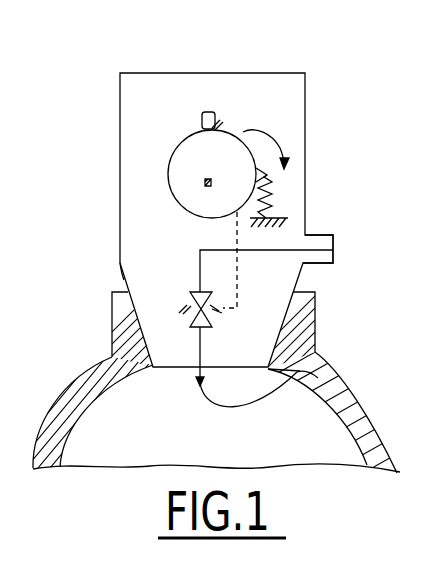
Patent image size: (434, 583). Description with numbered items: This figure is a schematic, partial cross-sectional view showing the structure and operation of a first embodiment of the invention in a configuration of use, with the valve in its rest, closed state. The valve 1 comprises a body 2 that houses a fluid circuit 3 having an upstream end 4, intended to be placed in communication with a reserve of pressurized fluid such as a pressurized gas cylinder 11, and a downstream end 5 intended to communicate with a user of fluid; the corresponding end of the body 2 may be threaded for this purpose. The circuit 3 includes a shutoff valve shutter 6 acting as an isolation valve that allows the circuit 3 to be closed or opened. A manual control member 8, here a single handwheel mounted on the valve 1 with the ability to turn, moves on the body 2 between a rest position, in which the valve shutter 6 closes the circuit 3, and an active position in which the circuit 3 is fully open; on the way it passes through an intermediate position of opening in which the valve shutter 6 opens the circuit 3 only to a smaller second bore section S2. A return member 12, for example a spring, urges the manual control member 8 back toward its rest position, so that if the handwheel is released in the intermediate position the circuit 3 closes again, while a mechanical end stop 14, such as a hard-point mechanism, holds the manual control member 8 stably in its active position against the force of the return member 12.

The valve 1 is at (217, 255).
The body 2 is at (295, 105).
The fluid circuit 3 is at (200, 269).
The upstream end 4 is at (328, 361).
The downstream end 5 is at (341, 246).
The shutoff valve shutter 6 is at (190, 310).
The manual control member 8 is at (180, 183).
The pressurized gas cylinder 11 is at (50, 414).
The return member 12 is at (284, 197).
The mechanical end stop 14 is at (219, 108).
The second bore section S2 is at (265, 133).